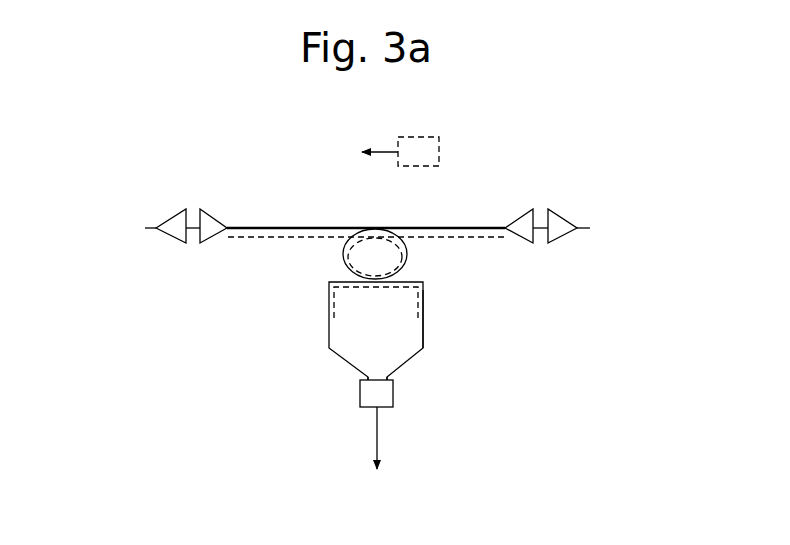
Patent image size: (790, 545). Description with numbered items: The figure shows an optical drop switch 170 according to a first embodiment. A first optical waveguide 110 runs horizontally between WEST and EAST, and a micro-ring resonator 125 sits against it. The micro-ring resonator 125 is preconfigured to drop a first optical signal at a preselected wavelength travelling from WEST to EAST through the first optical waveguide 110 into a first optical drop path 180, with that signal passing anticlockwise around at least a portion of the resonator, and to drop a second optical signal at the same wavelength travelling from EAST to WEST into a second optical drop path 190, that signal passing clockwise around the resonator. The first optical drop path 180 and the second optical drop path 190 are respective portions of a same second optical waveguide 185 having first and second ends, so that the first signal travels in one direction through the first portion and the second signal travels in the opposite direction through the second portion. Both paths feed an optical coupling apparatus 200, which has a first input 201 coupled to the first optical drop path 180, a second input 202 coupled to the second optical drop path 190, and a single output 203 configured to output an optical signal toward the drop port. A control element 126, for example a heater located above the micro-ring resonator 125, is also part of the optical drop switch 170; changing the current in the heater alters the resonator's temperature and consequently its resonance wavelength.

The first optical waveguide 110 is at (463, 228).
The micro-ring resonator 125 is at (346, 243).
The control element 126 is at (420, 137).
The optical drop switch 170 is at (362, 334).
The first optical drop path 180 is at (329, 308).
The second optical waveguide 185 is at (418, 292).
The second optical drop path 190 is at (423, 328).
The optical coupling apparatus 200 is at (360, 395).
The first input 201 is at (366, 378).
The second input 202 is at (388, 378).
The output 203 is at (383, 407).